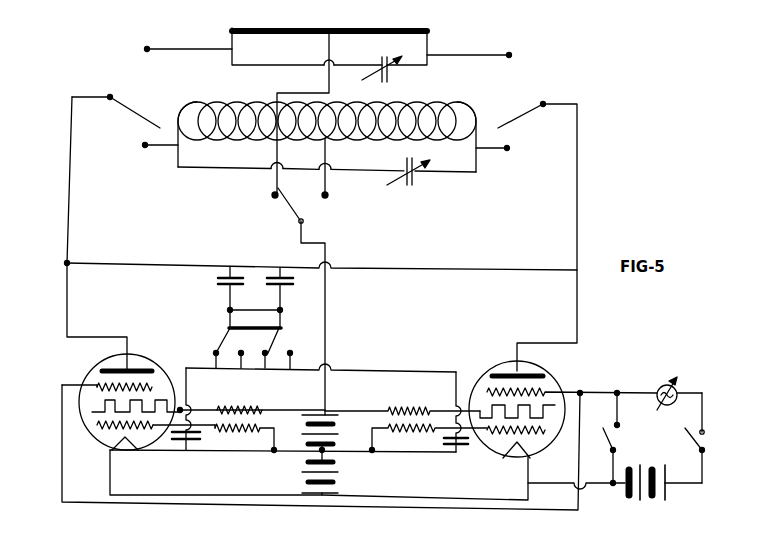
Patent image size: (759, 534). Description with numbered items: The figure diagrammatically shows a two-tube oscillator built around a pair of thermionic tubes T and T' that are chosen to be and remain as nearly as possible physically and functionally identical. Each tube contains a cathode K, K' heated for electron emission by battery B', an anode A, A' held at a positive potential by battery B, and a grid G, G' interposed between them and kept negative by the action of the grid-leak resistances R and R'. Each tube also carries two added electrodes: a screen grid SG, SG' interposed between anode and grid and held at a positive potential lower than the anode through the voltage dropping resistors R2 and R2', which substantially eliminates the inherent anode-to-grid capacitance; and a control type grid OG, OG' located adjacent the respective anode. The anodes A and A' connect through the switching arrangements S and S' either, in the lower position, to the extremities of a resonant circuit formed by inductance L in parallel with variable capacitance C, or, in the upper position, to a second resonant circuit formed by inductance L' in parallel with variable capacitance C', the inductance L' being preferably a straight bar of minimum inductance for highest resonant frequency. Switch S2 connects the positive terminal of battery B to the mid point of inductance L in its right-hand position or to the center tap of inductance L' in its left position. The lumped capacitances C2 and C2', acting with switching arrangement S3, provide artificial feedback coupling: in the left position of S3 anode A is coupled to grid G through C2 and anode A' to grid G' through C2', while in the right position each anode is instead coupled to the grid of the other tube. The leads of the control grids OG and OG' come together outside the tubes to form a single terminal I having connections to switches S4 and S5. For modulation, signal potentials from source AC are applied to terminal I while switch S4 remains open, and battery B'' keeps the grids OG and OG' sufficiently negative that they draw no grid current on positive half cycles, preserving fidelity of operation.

The inductance L' is at (328, 100).
The variable capacitance C' is at (392, 74).
The switching arrangement S' is at (116, 98).
The inductance L is at (326, 140).
The variable capacitance C is at (413, 177).
The switching arrangement S is at (530, 103).
The switch S2 is at (293, 205).
The lumped capacitance C2' is at (226, 277).
The lumped capacitance C2 is at (280, 277).
The switching arrangement S3 is at (263, 328).
The thermionic tube T' is at (122, 415).
The anode A' is at (116, 356).
The control type grid OG' is at (137, 365).
The screen grid SG' is at (175, 388).
The grid electrode G' is at (125, 434).
The cathode K' is at (125, 457).
The voltage dropping resistor R2' is at (245, 399).
The grid-leak resistance R' is at (243, 437).
The battery B is at (330, 438).
The battery B' is at (336, 478).
The voltage dropping resistor R2 is at (402, 400).
The grid-leak resistance R is at (429, 439).
The thermionic tube T is at (518, 421).
The anode A is at (524, 362).
The control type grid OG is at (535, 369).
The screen grid SG is at (542, 395).
The grid electrode G is at (528, 440).
The cathode K is at (513, 461).
The lead or terminal I is at (592, 398).
The switch S4 is at (620, 438).
The battery B'' is at (647, 487).
The switch S5 is at (688, 433).
The source AC is at (660, 387).